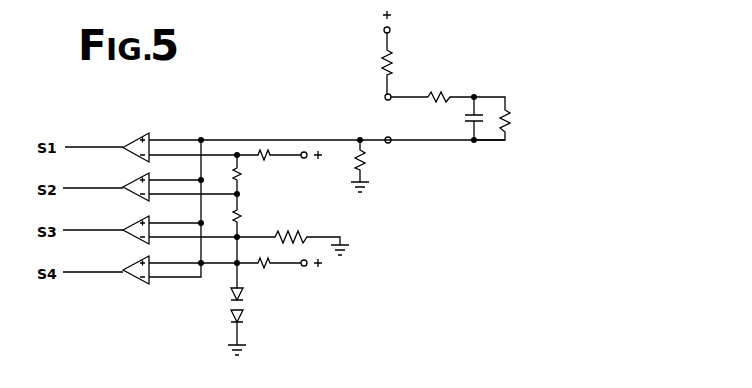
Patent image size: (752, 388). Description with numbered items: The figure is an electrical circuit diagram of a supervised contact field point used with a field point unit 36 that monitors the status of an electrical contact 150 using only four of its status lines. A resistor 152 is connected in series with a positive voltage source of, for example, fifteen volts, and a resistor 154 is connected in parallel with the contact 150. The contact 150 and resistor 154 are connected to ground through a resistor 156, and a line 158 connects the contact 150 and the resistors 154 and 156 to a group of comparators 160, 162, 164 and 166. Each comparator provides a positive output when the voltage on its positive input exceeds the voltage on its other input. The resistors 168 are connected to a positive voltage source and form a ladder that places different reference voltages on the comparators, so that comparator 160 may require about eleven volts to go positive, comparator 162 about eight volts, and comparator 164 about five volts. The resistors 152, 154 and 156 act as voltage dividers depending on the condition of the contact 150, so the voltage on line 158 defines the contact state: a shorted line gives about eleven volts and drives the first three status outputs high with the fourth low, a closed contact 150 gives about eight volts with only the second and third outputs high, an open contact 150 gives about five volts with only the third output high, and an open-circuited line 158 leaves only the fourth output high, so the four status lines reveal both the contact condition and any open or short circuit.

The field point unit 36 is at (557, 140).
The contact 150 is at (480, 122).
The resistor 152 is at (443, 93).
The resistor 154 is at (508, 118).
The resistor 156 is at (370, 155).
The line 158 is at (270, 140).
The comparator 160 is at (133, 141).
The comparator 162 is at (133, 181).
The comparator 164 is at (133, 224).
The comparator 166 is at (133, 265).
The resistors 168 is at (237, 173).